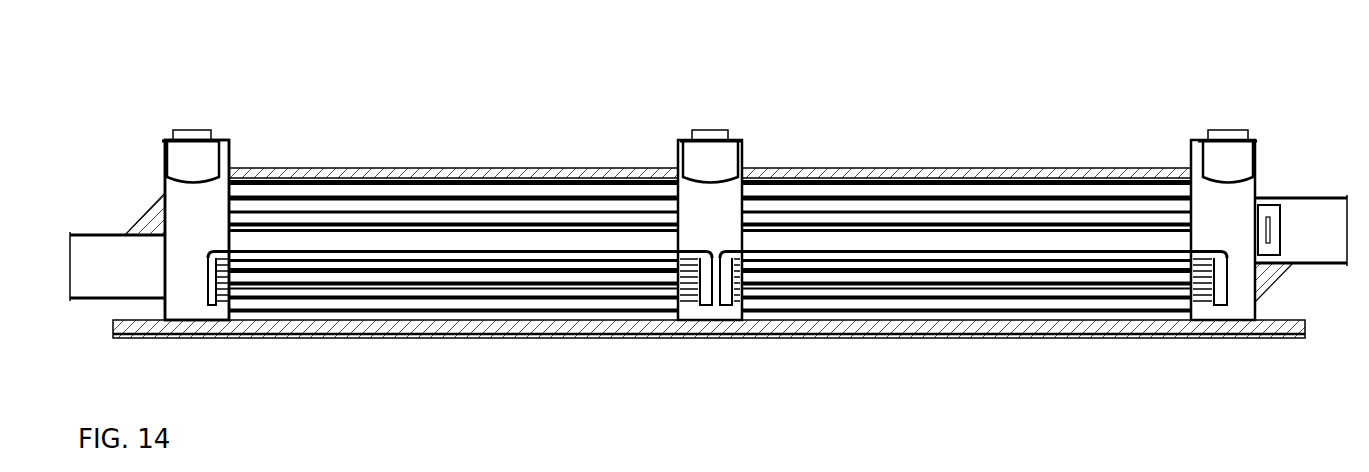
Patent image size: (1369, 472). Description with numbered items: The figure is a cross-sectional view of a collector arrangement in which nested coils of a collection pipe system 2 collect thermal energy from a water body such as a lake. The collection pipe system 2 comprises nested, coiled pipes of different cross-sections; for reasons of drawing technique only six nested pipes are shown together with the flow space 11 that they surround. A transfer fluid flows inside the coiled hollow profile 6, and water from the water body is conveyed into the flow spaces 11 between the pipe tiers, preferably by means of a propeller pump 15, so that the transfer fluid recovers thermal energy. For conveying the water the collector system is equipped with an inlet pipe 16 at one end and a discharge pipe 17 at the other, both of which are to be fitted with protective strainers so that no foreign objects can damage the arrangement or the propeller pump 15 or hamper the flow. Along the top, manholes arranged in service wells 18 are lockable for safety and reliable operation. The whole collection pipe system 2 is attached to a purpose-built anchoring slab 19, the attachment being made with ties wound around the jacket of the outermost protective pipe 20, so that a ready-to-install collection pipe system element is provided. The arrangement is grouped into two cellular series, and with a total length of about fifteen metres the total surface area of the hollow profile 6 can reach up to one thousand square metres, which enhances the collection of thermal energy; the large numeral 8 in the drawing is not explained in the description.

The collection pipe system 2 is at (410, 199).
The hollow profile 6 is at (838, 283).
The header chamber 8 is at (197, 230).
The flow space 11 is at (803, 240).
The propeller pump 15 is at (180, 231).
The inlet pipe 16 is at (82, 287).
The discharge pipe 17 is at (1337, 250).
The service well 18 is at (193, 135).
The anchoring slab 19 is at (1282, 338).
The outermost protective pipe 20 is at (498, 168).